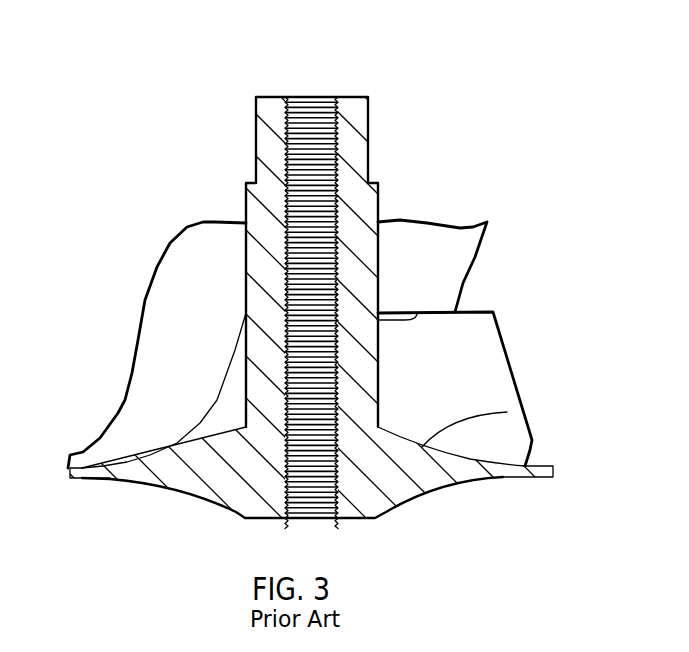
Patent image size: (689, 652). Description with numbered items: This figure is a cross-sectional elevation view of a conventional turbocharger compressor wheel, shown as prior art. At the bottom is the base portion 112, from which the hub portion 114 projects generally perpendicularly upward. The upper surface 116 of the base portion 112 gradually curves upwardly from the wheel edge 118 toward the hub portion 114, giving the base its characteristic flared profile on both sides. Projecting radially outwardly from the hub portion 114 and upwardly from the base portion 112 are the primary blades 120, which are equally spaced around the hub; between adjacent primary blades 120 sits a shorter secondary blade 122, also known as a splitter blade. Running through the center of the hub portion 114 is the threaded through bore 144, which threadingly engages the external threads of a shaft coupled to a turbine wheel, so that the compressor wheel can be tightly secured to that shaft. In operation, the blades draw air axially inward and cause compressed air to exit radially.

The base portion 112 is at (400, 485).
The hub portion 114 is at (265, 142).
The upper surface 116 is at (507, 412).
The wheel edge 118 is at (72, 474).
The primary blades 120 is at (190, 245).
The secondary blade 122 is at (491, 366).
The threaded through bore 144 is at (313, 98).